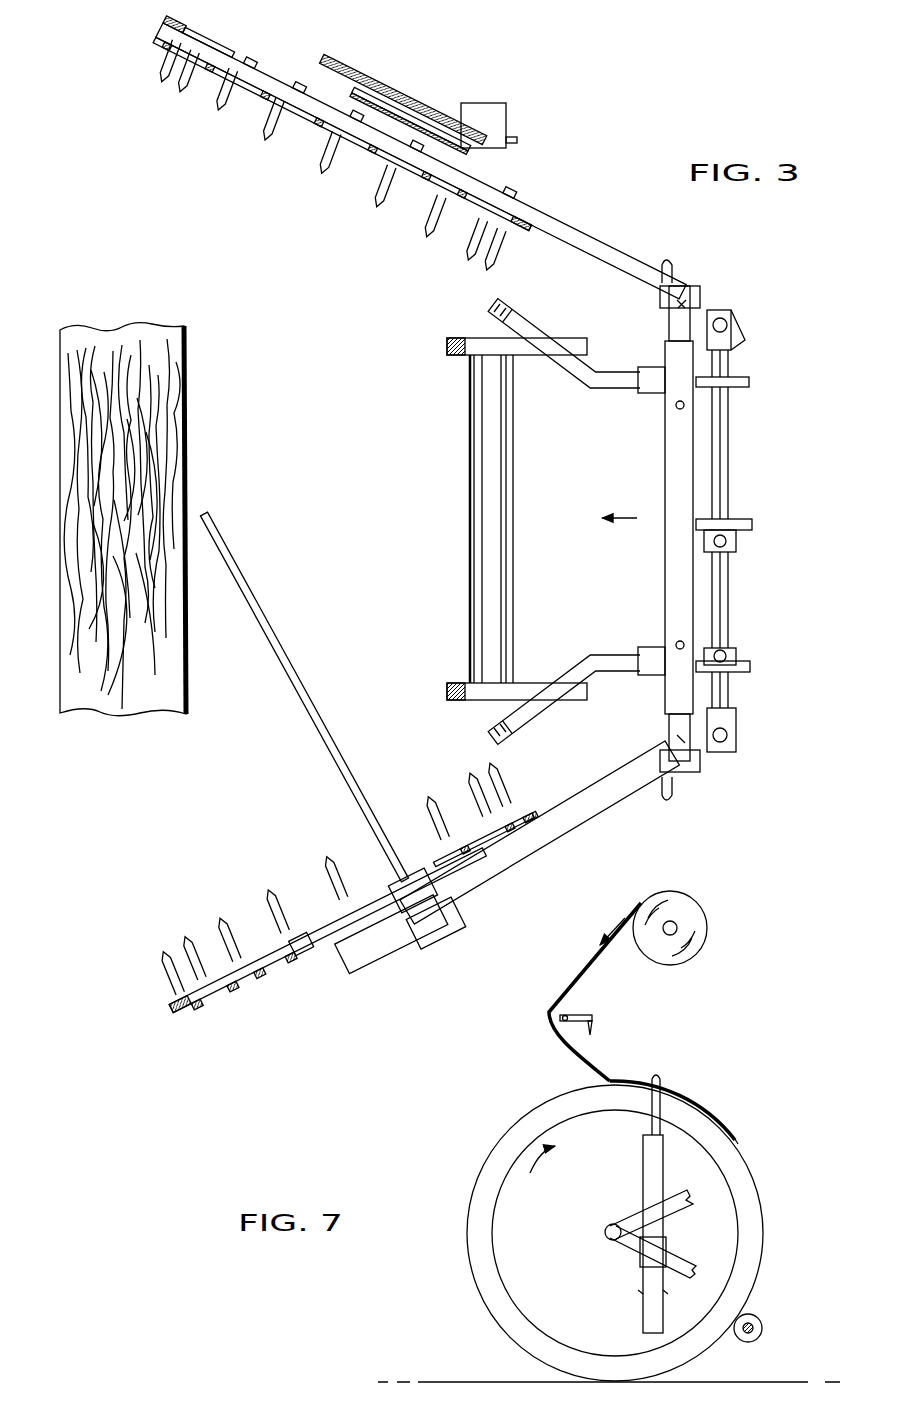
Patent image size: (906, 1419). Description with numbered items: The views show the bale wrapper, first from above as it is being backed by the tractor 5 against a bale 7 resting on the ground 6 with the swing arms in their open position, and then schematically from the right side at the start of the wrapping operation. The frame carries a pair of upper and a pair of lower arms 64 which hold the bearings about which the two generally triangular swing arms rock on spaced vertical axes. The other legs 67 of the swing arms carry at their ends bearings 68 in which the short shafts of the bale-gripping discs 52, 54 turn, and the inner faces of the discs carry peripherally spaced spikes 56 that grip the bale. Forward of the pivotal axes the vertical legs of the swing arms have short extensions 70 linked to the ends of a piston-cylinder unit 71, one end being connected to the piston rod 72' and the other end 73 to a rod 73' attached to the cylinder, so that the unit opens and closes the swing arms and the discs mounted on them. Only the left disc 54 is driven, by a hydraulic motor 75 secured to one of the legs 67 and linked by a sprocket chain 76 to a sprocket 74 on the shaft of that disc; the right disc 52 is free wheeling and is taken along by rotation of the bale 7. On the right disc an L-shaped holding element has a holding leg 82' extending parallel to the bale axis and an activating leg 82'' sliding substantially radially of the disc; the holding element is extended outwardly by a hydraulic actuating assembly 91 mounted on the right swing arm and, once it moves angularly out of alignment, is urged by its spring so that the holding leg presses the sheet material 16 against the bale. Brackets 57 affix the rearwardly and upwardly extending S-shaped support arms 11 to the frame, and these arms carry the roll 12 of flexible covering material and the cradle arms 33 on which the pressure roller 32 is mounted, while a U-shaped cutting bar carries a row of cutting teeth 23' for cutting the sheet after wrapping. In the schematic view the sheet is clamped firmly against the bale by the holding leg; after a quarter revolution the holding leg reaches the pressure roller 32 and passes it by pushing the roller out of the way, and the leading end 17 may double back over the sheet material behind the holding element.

In FIG. 3, the lower rake assembly 5 is at (523, 866).
In FIG. 3, the upper rake assembly 6 is at (545, 170).
In FIG. 3, the bale 7 is at (190, 350).
In FIG. 7, the bale 7 is at (490, 1162).
In FIG. 3, the S-shaped support arms 11 is at (576, 384).
In FIG. 7, the roll of flexible covering material 12 is at (700, 939).
In FIG. 7, the web guide 16 is at (566, 998).
In FIG. 7, the leading end 17 is at (722, 1117).
In FIG. 7, the cutting teeth 23' is at (611, 1028).
In FIG. 3, the pressure roller 32 is at (480, 483).
In FIG. 7, the pressure roller 32 is at (765, 1327).
In FIG. 3, the cradle arms 33 is at (582, 338).
In FIG. 3, the right disc 52 is at (276, 963).
In FIG. 7, the right disc 52 is at (498, 1222).
In FIG. 3, the left disc 54 is at (232, 56).
In FIG. 3, the peripherally spaced spikes 56 is at (268, 140).
In FIG. 3, the brackets 57 is at (655, 367).
In FIG. 3, the upper and lower arms 64 is at (672, 323).
In FIG. 3, the legs of the swing arms 67 is at (598, 235).
In FIG. 7, the legs of the swing arms 67 is at (695, 1270).
In FIG. 3, the bearings 68 is at (343, 925).
In FIG. 3, the short extensions 70 is at (700, 293).
In FIG. 3, the piston-cylinder unit 71 is at (752, 580).
In FIG. 3, the piston rod 72' is at (751, 700).
In FIG. 3, the end 73 is at (751, 332).
In FIG. 3, the rod 73' is at (750, 434).
In FIG. 3, the sprocket 74 is at (365, 87).
In FIG. 3, the hydraulic motor 75 is at (493, 118).
In FIG. 3, the sprocket chain 76 is at (430, 125).
In FIG. 3, the holding leg 82' is at (305, 697).
In FIG. 7, the activating leg 82'' is at (632, 1204).
In FIG. 7, the hydraulic actuating assembly 91 is at (643, 1195).